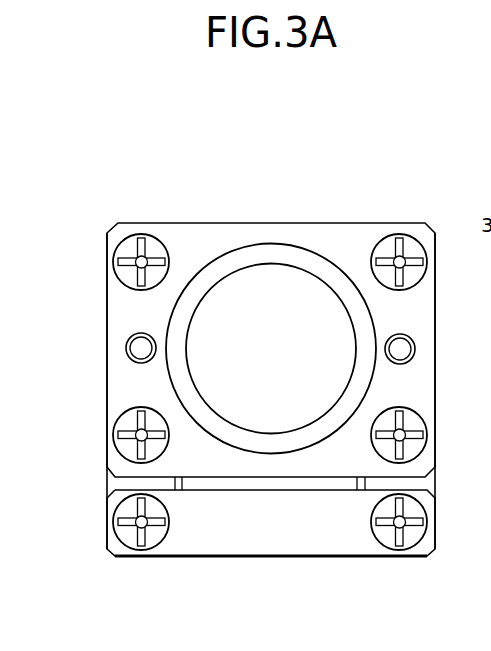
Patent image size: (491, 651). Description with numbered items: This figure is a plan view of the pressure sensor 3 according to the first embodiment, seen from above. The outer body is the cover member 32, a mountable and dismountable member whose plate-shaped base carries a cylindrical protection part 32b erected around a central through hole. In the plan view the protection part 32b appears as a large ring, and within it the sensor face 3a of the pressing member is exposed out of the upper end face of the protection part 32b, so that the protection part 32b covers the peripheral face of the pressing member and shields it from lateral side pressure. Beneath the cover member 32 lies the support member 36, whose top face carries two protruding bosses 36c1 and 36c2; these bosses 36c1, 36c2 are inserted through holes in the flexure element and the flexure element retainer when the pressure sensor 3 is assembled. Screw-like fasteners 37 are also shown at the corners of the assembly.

The pressure sensor 3 is at (301, 182).
The sensor face 3a is at (232, 372).
The cover member 32 is at (338, 265).
The protection part 32b is at (183, 308).
The support member 36 is at (280, 535).
The boss 36c1 is at (141, 348).
The boss 36c2 is at (400, 348).
The screw 37 is at (128, 262).